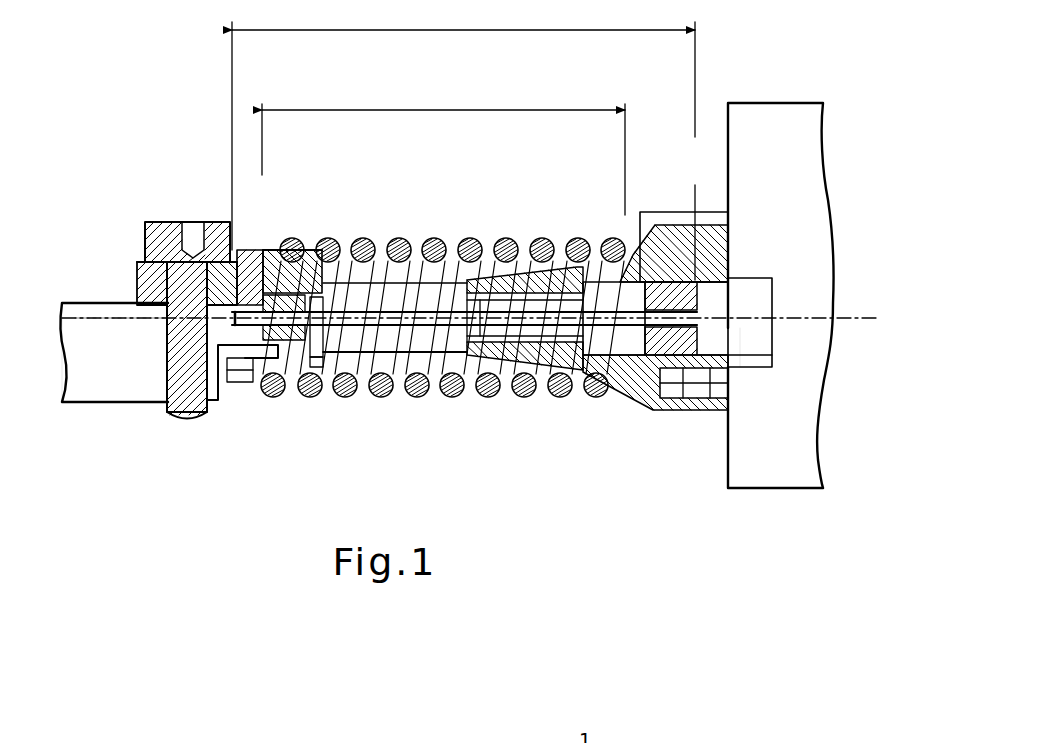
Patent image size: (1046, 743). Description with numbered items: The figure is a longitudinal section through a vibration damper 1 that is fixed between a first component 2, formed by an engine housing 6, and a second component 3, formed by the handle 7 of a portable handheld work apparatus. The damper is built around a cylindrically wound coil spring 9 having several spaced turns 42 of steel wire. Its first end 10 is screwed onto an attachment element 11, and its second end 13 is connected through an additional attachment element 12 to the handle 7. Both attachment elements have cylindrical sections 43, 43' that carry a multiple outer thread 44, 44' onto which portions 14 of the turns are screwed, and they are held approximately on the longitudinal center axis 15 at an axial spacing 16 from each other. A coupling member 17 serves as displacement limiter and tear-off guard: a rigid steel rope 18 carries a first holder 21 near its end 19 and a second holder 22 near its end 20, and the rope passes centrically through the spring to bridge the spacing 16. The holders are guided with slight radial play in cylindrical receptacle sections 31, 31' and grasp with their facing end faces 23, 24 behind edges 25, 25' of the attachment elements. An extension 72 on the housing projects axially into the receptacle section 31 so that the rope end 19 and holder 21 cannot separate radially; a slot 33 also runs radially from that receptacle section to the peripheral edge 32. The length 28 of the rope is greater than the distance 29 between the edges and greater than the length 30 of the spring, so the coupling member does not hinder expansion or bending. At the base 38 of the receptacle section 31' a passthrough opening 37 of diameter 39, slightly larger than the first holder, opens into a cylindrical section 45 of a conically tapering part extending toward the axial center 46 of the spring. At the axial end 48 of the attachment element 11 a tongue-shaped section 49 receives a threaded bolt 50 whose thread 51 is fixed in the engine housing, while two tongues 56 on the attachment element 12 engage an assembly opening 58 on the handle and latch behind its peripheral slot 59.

The vibration damper 1 is at (336, 102).
The first component 2 is at (82, 296).
The second component 3 is at (790, 90).
The engine housing 6 is at (72, 405).
The handle 7 is at (805, 157).
The coil spring 9 is at (430, 406).
The first end of the coil spring 10 is at (264, 425).
The attachment element 11 is at (270, 250).
The additional attachment element 12 is at (640, 236).
The second end of the coil spring 13 is at (600, 400).
The portions of turns 14 is at (290, 400).
The longitudinal center axis 15 is at (852, 312).
The spacing 16 is at (398, 398).
The coupling member 17 is at (615, 300).
The rope 18 is at (546, 362).
The end of the rope 19 is at (240, 238).
The end of the rope 20 is at (726, 262).
The first holder 21 is at (332, 268).
The second holder 22 is at (672, 400).
The end face 23 is at (395, 262).
The end face 24 is at (586, 372).
The edge 25 is at (330, 401).
The edge 25' is at (536, 439).
The length of the rope 28 is at (493, 30).
The distance of the edges 29 is at (474, 262).
The length of the coil spring 30 is at (565, 110).
The receptacle section 31 is at (233, 403).
The receptacle section 31' is at (709, 428).
The peripheral edge 32 is at (170, 420).
The slot 33 is at (240, 386).
The passthrough opening 37 is at (565, 238).
The base 38 is at (760, 322).
The diameter 39 is at (526, 382).
The turns 42 is at (437, 240).
The cylindrical section 43 is at (309, 209).
The cylindrical section 43' is at (564, 217).
The multiple outer thread 44 is at (273, 214).
The multiple outer thread 44' is at (619, 397).
The cylindrical section 45 is at (478, 380).
The axial center of the coil spring 46 is at (415, 398).
The axial end 48 is at (176, 324).
The tongue-shaped section 49 is at (150, 262).
The threaded bolt 50 is at (165, 222).
The thread 51 is at (150, 405).
The tongues 56 is at (770, 336).
The assembly opening 58 is at (770, 280).
The peripheral slot 59 is at (746, 384).
The extension (projection) 72 is at (135, 378).